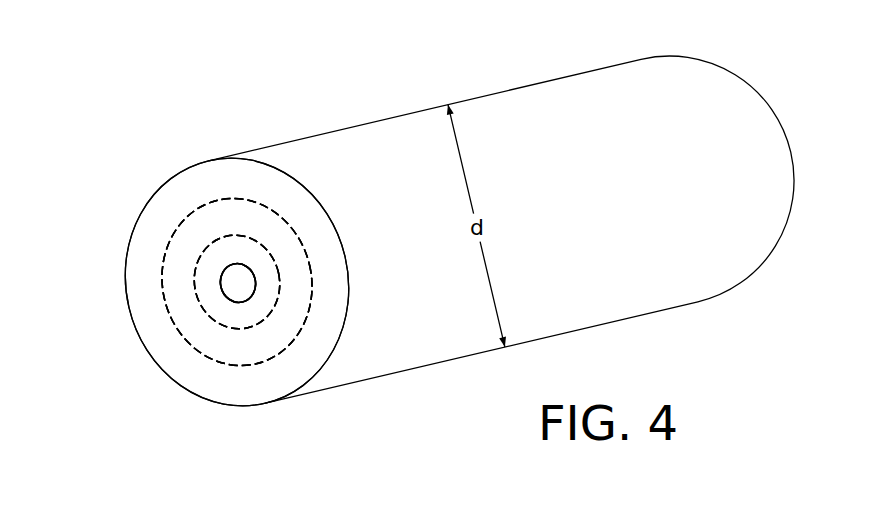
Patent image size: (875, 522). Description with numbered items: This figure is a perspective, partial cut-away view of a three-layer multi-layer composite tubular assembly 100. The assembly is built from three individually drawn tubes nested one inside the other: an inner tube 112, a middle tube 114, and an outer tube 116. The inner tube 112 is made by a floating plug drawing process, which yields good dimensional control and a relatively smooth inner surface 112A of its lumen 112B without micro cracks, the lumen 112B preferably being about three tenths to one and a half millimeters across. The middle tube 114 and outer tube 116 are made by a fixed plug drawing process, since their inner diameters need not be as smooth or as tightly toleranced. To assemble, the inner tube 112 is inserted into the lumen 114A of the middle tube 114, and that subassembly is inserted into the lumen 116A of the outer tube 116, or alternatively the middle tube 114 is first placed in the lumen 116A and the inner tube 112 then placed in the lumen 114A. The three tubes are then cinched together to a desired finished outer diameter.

The multi-layer composite tubular assembly 100 is at (322, 103).
The inner tube 112 is at (232, 252).
The inner surface 112A is at (234, 272).
The lumen 112B is at (220, 291).
The middle tube 114 is at (177, 274).
The lumen 114A is at (230, 332).
The outer tube 116 is at (150, 307).
The lumen 116A is at (240, 368).